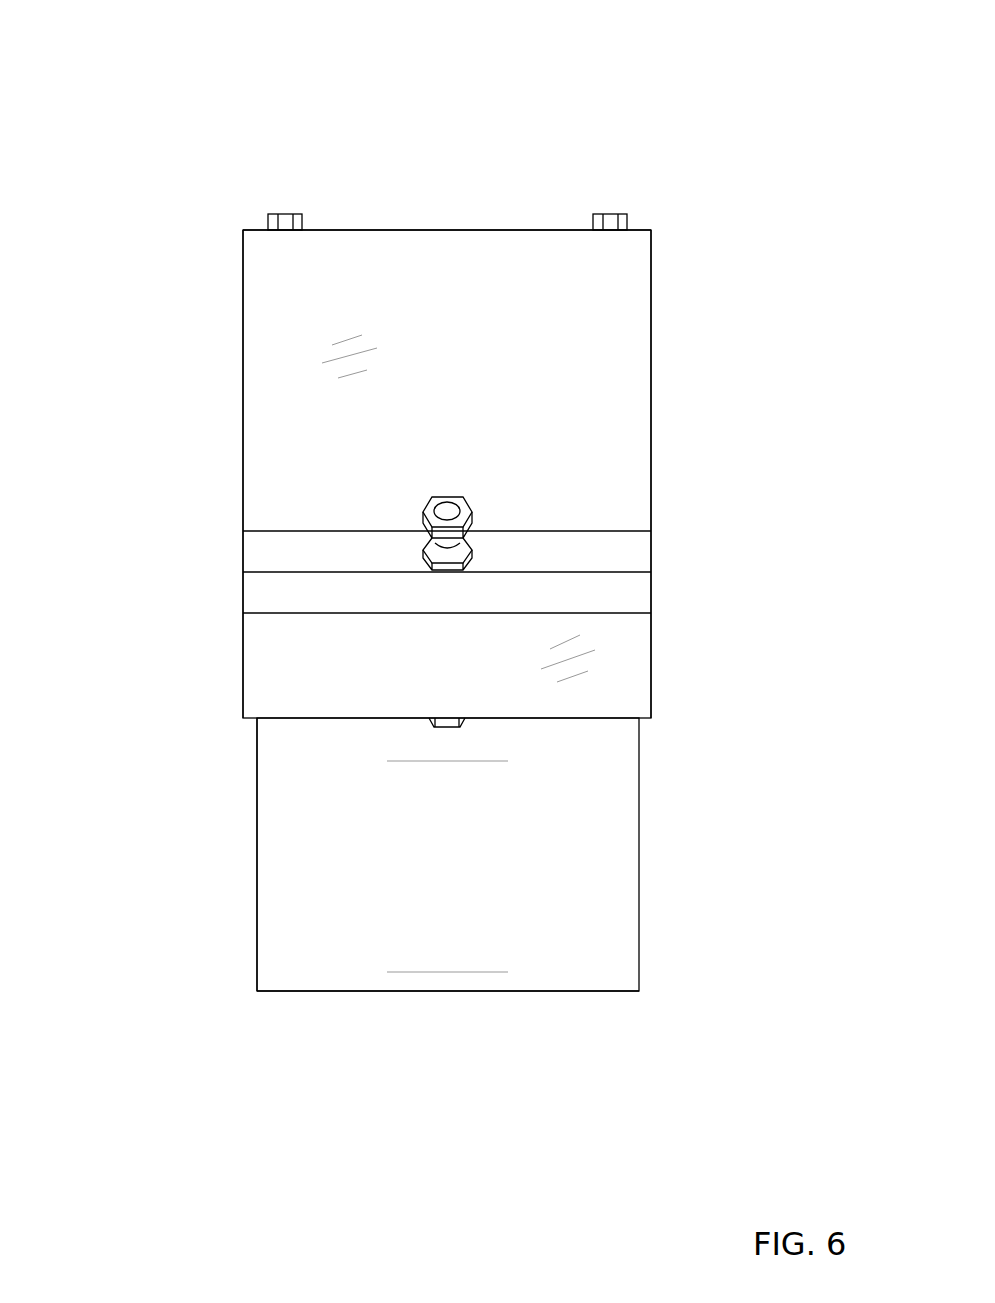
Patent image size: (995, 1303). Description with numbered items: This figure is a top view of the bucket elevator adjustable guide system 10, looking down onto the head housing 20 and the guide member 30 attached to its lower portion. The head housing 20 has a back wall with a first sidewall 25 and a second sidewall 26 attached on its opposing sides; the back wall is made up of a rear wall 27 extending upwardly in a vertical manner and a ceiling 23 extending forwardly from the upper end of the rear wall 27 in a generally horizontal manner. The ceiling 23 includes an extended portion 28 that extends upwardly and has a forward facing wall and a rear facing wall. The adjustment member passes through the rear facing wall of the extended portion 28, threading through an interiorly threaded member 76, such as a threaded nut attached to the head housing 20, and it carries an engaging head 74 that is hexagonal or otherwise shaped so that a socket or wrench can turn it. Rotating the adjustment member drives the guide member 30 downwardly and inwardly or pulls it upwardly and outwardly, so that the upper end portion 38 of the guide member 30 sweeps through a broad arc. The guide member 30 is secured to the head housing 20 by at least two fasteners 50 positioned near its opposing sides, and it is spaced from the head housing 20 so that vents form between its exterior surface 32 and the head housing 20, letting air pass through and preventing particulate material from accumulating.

The bucket elevator adjustable guide system 10 is at (117, 116).
The head housing 20 is at (230, 306).
The ceiling 23 is at (563, 320).
The first sidewall 25 is at (243, 388).
The second sidewall 26 is at (651, 435).
The rear wall 27 is at (470, 230).
The extended portion 28 is at (607, 560).
The guide member 30 is at (244, 895).
The exterior surface 32 is at (307, 953).
The upper end portion 38 is at (347, 991).
The fasteners 50 is at (285, 214).
The engaging head 74 is at (432, 502).
The interiorly threaded member 76 is at (423, 557).